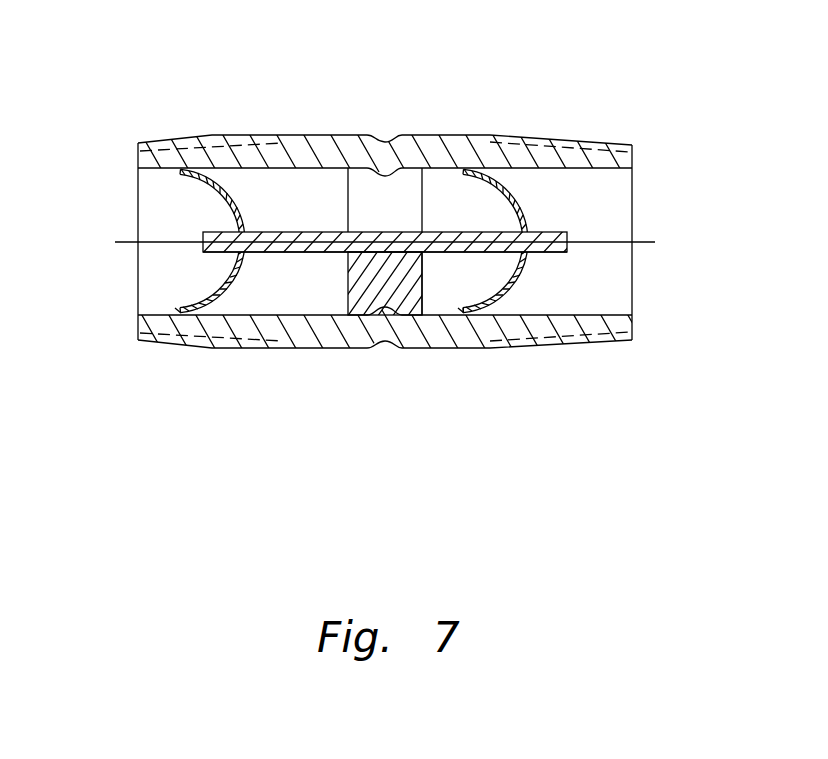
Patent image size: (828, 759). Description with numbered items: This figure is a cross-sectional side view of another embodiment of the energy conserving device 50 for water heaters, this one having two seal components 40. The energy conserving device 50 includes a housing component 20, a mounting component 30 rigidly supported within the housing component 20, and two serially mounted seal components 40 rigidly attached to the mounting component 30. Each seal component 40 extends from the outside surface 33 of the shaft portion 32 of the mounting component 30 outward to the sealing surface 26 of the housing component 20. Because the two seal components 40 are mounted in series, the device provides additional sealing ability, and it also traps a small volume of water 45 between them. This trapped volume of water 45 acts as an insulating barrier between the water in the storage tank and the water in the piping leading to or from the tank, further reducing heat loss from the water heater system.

The housing component 20 is at (411, 205).
The sealing surface 26 is at (607, 170).
The mounting component 30 is at (348, 292).
The shaft portion 32 is at (383, 226).
The outside surface 33 is at (285, 253).
The seal component 40 is at (197, 302).
The volume of water 45 is at (452, 298).
The energy conserving device 50 is at (389, 220).